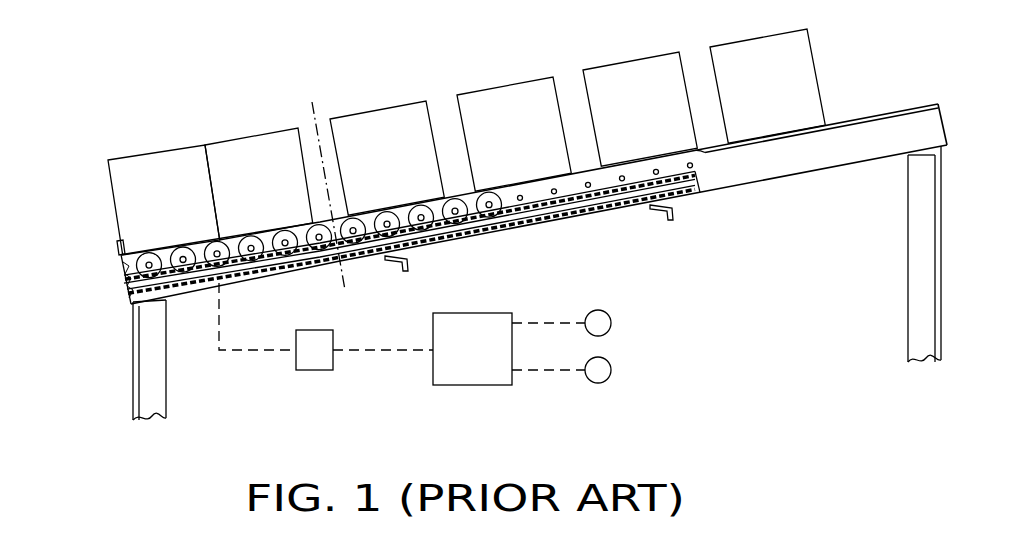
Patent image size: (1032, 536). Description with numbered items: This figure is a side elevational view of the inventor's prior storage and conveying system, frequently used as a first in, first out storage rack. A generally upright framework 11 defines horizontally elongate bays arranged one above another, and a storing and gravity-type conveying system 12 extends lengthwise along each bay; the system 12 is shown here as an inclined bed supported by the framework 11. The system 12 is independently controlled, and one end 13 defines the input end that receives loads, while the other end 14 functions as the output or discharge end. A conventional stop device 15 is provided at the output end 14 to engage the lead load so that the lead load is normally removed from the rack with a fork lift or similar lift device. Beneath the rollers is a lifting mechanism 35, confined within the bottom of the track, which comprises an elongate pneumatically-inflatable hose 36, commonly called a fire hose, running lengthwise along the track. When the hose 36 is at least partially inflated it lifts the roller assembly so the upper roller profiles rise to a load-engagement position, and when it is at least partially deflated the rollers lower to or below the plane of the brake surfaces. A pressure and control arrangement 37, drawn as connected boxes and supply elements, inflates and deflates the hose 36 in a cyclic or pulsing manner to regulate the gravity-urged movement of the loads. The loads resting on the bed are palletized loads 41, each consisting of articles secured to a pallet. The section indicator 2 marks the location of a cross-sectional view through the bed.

The section line 2- 2 is at (312, 102).
The upright framework 11 is at (906, 292).
The storing and gravity-type conveying system 12 is at (626, 212).
The input end 13 is at (946, 112).
The output end 14 is at (125, 272).
The stop device 15 is at (118, 246).
The lifting mechanism 35 is at (252, 356).
The pneumatically-inflatable hose 36 is at (486, 228).
The pressure and control arrangement 37 is at (327, 387).
The palletized loads 41 is at (155, 167).